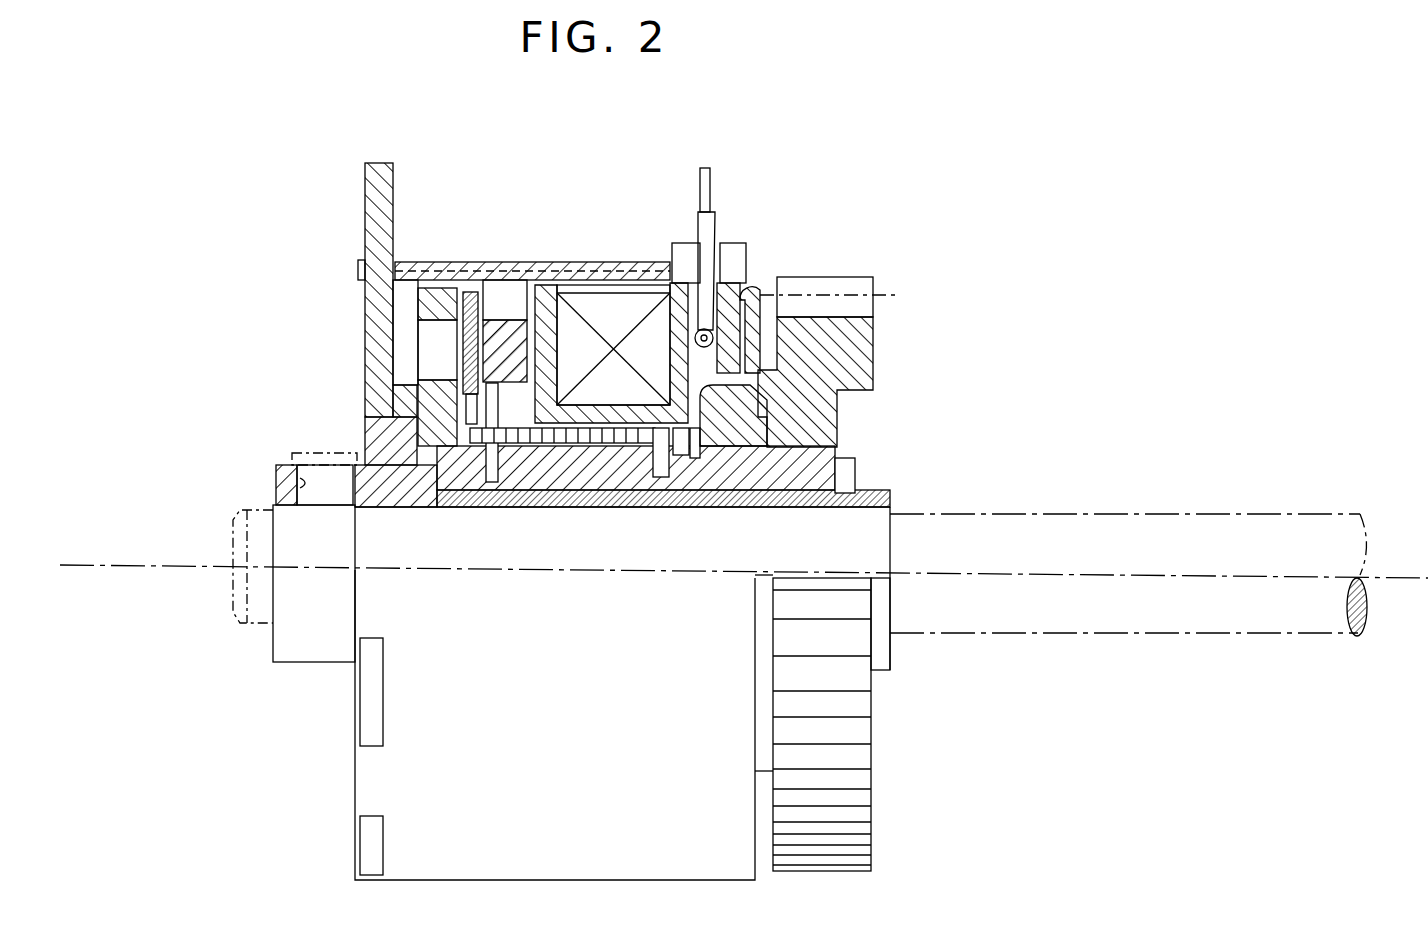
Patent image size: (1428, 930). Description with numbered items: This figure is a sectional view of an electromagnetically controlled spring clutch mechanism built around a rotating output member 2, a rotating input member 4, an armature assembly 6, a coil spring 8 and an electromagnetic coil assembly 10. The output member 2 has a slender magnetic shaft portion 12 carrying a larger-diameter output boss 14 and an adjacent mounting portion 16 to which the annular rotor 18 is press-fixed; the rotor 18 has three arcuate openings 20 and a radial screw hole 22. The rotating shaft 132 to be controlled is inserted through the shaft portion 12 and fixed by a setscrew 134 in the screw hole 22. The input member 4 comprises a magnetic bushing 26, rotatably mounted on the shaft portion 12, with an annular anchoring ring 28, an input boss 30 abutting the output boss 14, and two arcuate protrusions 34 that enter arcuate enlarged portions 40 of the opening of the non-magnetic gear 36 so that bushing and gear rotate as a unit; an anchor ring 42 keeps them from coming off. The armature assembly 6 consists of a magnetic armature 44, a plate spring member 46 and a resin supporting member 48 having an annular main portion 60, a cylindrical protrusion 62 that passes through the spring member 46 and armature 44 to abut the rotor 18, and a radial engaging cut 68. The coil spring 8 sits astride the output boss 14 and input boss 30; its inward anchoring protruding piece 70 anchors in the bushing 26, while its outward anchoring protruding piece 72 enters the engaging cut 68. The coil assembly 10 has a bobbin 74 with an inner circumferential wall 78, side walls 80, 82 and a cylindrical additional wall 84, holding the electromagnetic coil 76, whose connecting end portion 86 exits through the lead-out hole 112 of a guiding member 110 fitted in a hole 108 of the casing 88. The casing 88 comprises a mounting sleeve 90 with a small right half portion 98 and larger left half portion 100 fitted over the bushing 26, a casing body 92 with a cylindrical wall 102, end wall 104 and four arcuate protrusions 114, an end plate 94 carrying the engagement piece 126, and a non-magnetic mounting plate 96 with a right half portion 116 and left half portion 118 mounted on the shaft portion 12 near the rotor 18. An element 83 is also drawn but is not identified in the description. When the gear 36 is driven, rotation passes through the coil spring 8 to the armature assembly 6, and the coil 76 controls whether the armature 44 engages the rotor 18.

The rotating output member 2 is at (507, 550).
The rotating input member 4 is at (874, 443).
The armature assembly 6 is at (493, 296).
The coil spring 8 is at (569, 452).
The electromagnetic coil assembly 10 is at (638, 228).
The shaft portion 12 is at (641, 516).
The output boss 14 is at (475, 507).
The mounting portion 16 is at (437, 505).
The rotor 18 is at (411, 298).
The arcuate openings 20 is at (432, 338).
The screw hole 22 is at (278, 478).
The bushing 26 is at (695, 502).
The annular anchoring ring 28 is at (677, 445).
The input boss 30 is at (590, 432).
The arcuate protrusions 34 is at (858, 481).
The gear 36 is at (878, 334).
The arcuate enlarged portions 40 is at (822, 455).
The anchor ring 42 is at (856, 467).
The armature 44 is at (468, 290).
The spring member 46 is at (490, 306).
The supporting member 48 is at (553, 268).
The annular main portion 60 is at (543, 328).
The cylindrical protrusion 62 is at (363, 428).
The engaging cut 68 is at (440, 388).
The anchoring protruding piece 70 is at (676, 408).
The anchoring protruding piece 72 is at (497, 400).
The bobbin 74 is at (615, 432).
The electromagnetic coil 76 is at (626, 290).
The cylindrical inner circumferential wall 78 is at (587, 405).
The annular side wall 80 is at (664, 330).
The annular side wall 82 is at (558, 305).
The seal 83 is at (747, 325).
The cylindrical additional wall 84 is at (798, 332).
The connecting end portion 86 is at (704, 245).
The casing 88 is at (526, 240).
The mounting sleeve 90 is at (770, 425).
The casing body 92 is at (605, 256).
The end plate 94 is at (360, 300).
The mounting plate 96 is at (360, 435).
The right half portion 98 is at (873, 294).
The left half portion 100 is at (755, 508).
The cylindrical wall 102 is at (430, 262).
The end wall 104 is at (800, 335).
The hole 108 is at (720, 247).
The guiding member 110 is at (750, 240).
The lead-out hole 112 is at (693, 243).
The arcuate protrusions 114 is at (362, 268).
The right half portion 116 is at (392, 373).
The left half portion 118 is at (366, 405).
The engagement piece 126 is at (367, 185).
The rotating shaft 132 is at (1015, 512).
The setscrew 134 is at (290, 455).